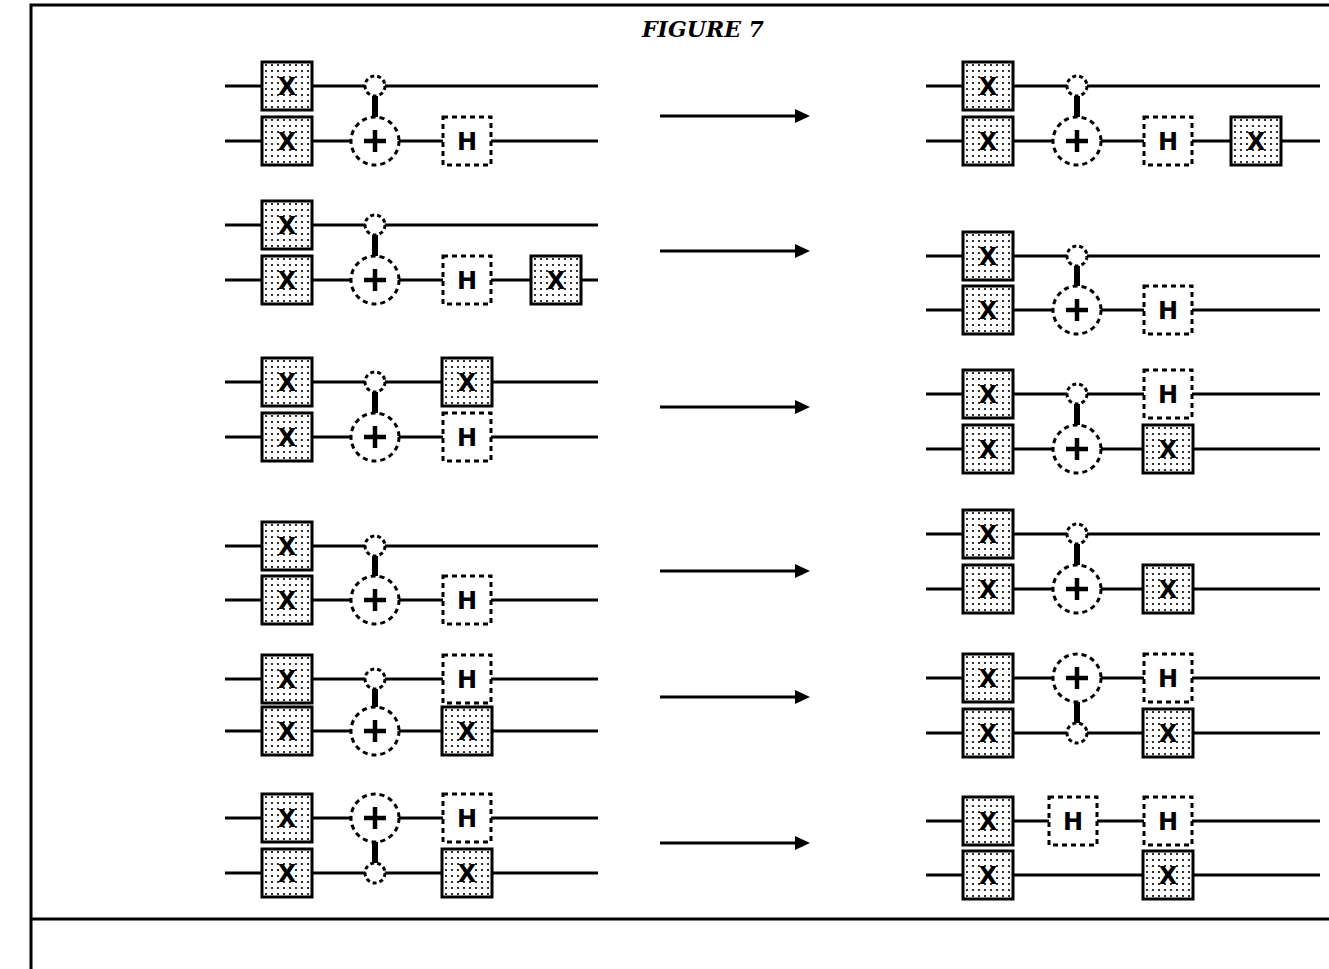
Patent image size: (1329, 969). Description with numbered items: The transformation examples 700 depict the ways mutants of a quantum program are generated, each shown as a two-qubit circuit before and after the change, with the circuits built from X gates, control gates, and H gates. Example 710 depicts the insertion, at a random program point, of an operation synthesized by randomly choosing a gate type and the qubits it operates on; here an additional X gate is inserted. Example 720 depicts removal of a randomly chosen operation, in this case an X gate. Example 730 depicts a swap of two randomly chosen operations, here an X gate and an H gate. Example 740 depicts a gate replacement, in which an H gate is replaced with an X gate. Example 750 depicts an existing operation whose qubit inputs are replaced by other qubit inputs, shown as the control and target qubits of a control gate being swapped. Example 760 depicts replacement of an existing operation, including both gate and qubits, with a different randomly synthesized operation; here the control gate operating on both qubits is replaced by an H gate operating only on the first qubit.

The quantum circuit transformation diagram 700 is at (77, 28).
The example of insertion transformation 710 is at (93, 113).
The example of removal transformation 720 is at (93, 258).
The example of swap transformation 730 is at (93, 406).
The example of gate replacement transformation 740 is at (93, 553).
The example of qubit input replacement transformation 750 is at (93, 701).
The example of operation replacement transformation 760 is at (93, 846).